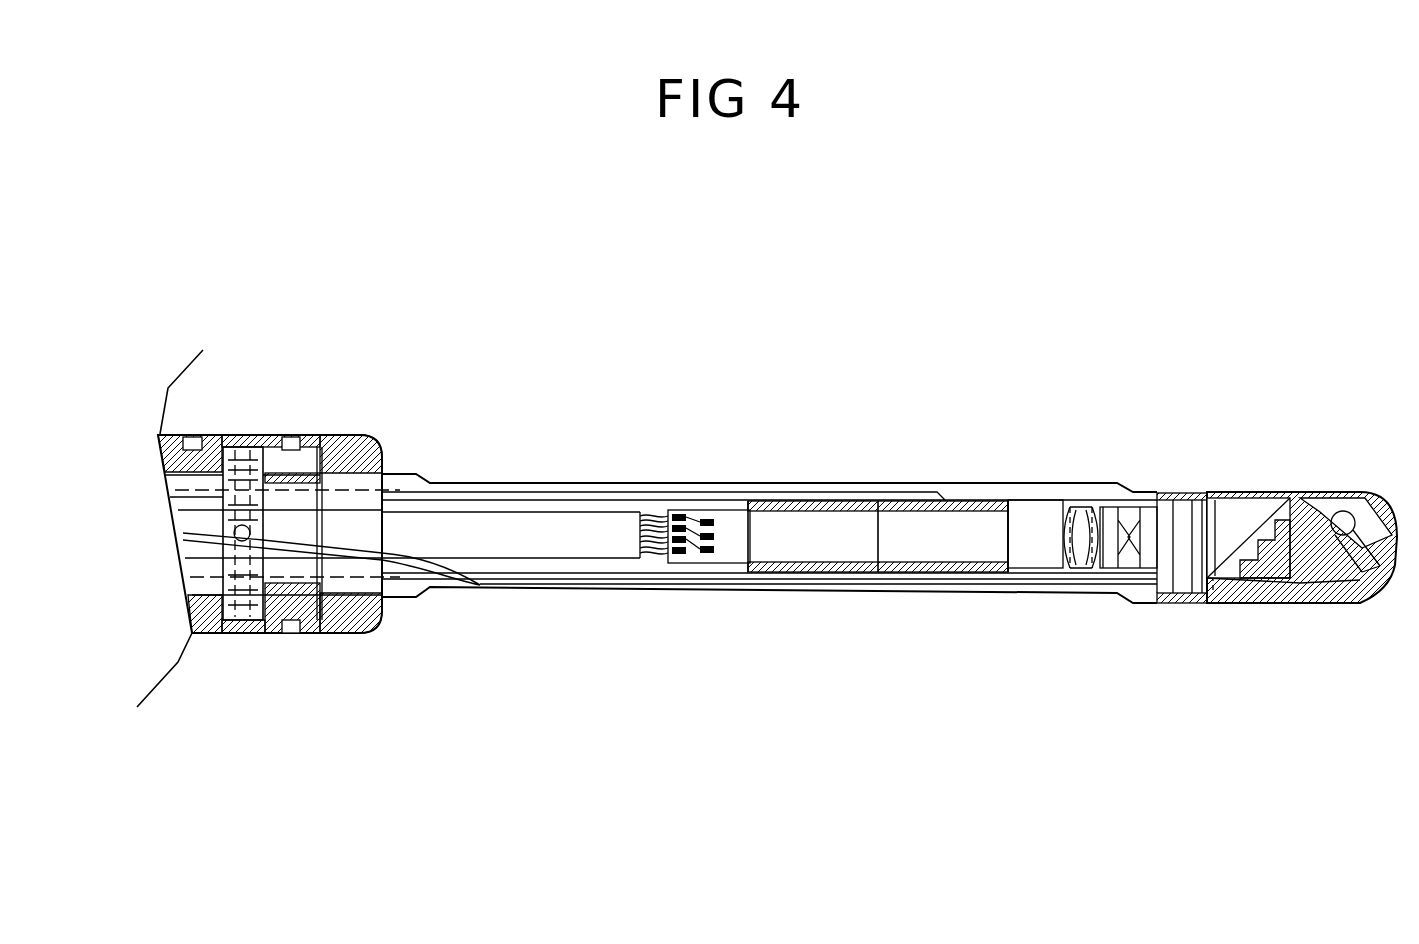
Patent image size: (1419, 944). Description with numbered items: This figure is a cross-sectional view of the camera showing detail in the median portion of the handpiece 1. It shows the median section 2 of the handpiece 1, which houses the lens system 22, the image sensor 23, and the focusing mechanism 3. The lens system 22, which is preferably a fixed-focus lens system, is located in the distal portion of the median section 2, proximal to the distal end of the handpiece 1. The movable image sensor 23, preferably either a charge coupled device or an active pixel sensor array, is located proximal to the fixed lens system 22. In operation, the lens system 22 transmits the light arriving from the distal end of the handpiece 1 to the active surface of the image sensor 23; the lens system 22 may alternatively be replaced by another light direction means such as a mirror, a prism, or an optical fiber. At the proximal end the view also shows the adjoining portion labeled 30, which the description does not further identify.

The handpiece 1 is at (1262, 490).
The median section 2 is at (860, 483).
The focusing mechanism 3 is at (367, 437).
The lens system 22 is at (1090, 550).
The image sensor 23 is at (1040, 535).
The grip body 30 is at (203, 350).